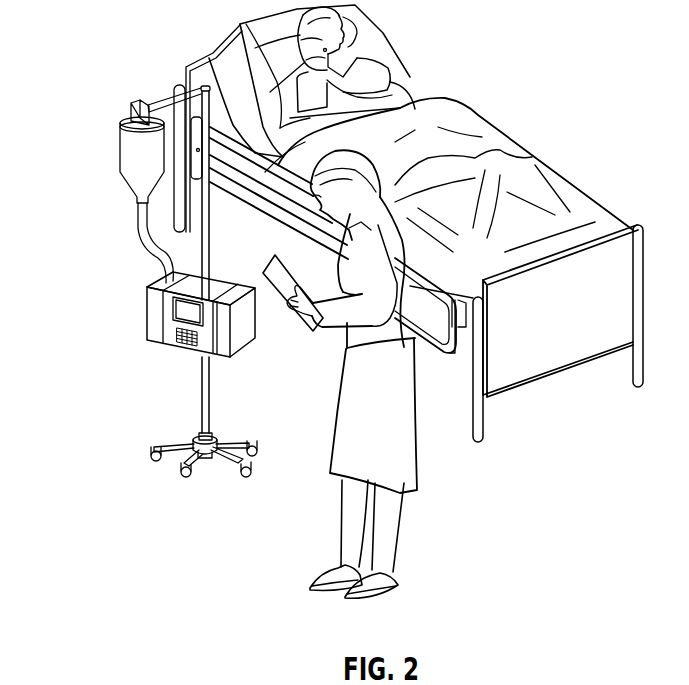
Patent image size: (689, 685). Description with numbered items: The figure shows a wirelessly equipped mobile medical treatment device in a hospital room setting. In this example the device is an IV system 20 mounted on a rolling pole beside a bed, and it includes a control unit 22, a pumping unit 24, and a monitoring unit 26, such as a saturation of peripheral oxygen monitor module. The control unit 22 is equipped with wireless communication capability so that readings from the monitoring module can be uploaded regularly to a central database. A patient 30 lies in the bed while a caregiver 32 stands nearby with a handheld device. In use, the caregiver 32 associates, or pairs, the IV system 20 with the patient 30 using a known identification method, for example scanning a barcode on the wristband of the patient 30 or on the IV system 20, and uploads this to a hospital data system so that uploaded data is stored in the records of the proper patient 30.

The IV system 20 is at (93, 41).
The control unit 22 is at (190, 318).
The pumping unit 24 is at (154, 297).
The monitoring unit 26 is at (214, 347).
The patient 30 is at (389, 83).
The caregiver 32 is at (350, 388).